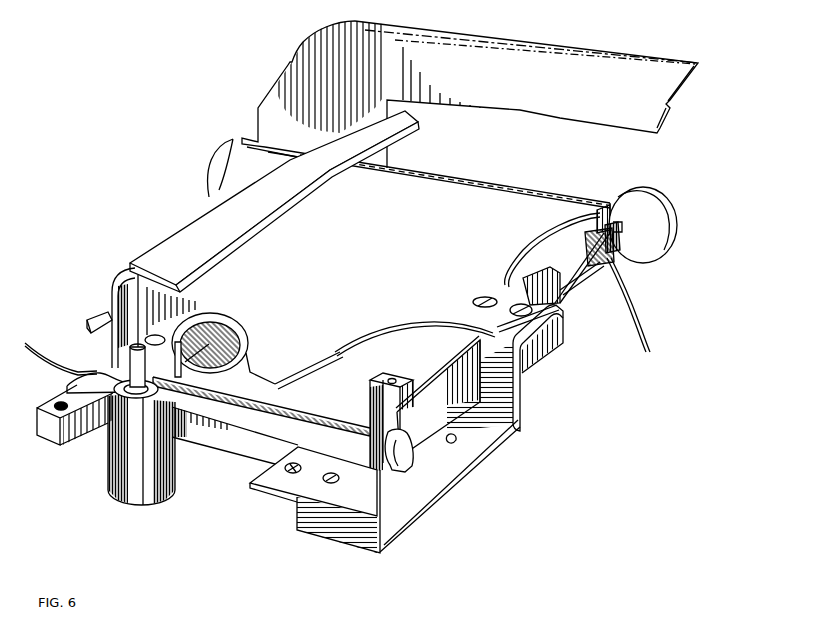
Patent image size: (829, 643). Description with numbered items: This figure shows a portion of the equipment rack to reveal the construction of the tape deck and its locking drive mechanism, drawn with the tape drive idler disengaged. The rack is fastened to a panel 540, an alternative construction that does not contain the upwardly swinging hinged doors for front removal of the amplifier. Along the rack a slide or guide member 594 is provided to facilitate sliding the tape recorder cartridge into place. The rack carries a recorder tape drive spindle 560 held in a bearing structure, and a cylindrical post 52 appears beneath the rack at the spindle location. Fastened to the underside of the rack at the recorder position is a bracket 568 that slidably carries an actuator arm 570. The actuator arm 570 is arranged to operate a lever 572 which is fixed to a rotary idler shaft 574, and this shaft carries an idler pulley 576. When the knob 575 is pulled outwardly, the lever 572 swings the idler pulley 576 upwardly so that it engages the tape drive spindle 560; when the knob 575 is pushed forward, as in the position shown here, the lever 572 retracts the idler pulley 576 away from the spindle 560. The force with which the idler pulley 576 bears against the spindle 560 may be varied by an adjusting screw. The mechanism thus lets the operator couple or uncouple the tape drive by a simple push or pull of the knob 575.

The cylindrical post 52 is at (105, 458).
The panel 540 is at (376, 24).
The recorder tape drive spindle 560 is at (75, 380).
The bracket 568 is at (430, 493).
The actuator arm 570 is at (540, 363).
The lever 572 is at (401, 441).
The rotary idler shaft 574 is at (290, 402).
The knob 575 is at (637, 252).
The idler pulley 576 is at (244, 362).
The slide or guide members 594 is at (177, 240).